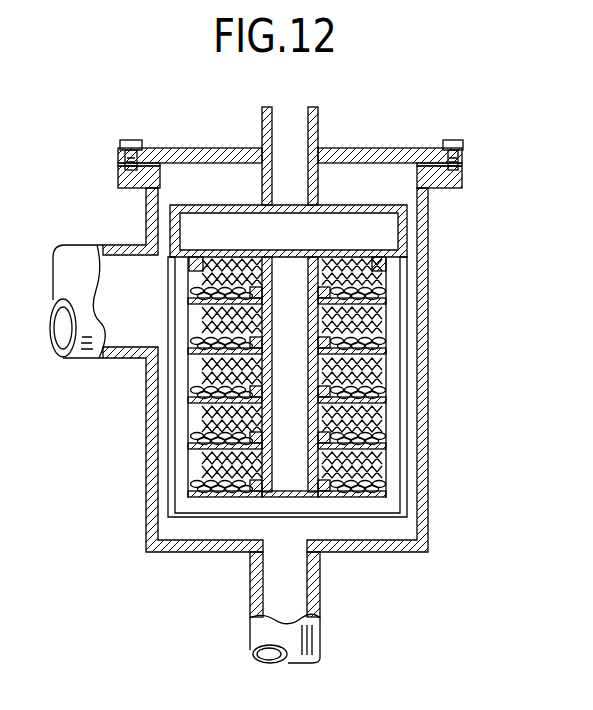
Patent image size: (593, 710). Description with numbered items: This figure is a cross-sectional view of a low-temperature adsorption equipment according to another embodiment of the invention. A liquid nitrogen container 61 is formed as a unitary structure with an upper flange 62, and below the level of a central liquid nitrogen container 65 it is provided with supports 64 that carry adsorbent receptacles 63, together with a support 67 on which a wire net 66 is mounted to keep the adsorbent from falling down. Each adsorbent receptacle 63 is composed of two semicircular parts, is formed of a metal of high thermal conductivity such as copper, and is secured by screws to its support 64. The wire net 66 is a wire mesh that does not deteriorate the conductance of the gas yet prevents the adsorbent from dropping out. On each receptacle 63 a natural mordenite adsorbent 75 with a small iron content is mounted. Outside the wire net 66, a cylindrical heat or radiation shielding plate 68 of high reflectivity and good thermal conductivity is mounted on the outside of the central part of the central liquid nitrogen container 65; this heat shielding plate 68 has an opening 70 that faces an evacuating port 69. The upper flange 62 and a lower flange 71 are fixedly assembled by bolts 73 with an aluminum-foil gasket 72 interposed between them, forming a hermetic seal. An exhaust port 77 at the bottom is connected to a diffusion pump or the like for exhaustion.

The liquid nitrogen container 61 is at (337, 205).
The upper flange 62 is at (392, 149).
The adsorbent receptacles 63 is at (402, 291).
The supports 64 is at (360, 325).
The central liquid nitrogen container 65 is at (385, 233).
The wire net 66 is at (188, 279).
The support 67 is at (400, 262).
The heat shielding plate 68 is at (420, 374).
The evacuating port 69 is at (112, 333).
The opening 70 is at (182, 310).
The lower flange 71 is at (462, 178).
The aluminum-foil gasket 72 is at (443, 183).
The bolts 73 is at (458, 140).
The natural mordenite adsorbent 75 is at (385, 300).
The exhaust port 77 is at (292, 590).